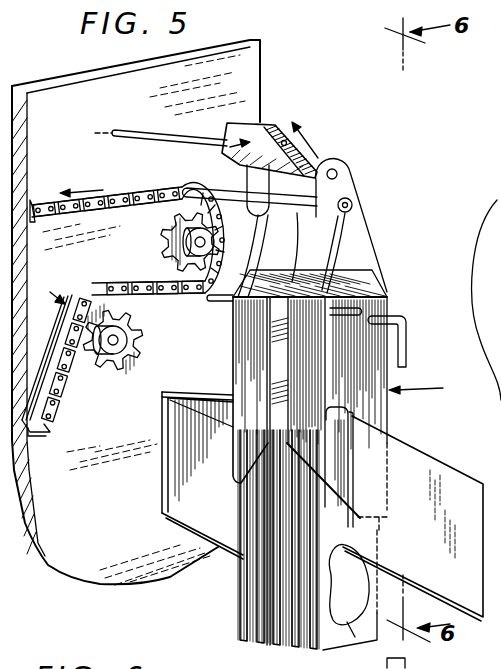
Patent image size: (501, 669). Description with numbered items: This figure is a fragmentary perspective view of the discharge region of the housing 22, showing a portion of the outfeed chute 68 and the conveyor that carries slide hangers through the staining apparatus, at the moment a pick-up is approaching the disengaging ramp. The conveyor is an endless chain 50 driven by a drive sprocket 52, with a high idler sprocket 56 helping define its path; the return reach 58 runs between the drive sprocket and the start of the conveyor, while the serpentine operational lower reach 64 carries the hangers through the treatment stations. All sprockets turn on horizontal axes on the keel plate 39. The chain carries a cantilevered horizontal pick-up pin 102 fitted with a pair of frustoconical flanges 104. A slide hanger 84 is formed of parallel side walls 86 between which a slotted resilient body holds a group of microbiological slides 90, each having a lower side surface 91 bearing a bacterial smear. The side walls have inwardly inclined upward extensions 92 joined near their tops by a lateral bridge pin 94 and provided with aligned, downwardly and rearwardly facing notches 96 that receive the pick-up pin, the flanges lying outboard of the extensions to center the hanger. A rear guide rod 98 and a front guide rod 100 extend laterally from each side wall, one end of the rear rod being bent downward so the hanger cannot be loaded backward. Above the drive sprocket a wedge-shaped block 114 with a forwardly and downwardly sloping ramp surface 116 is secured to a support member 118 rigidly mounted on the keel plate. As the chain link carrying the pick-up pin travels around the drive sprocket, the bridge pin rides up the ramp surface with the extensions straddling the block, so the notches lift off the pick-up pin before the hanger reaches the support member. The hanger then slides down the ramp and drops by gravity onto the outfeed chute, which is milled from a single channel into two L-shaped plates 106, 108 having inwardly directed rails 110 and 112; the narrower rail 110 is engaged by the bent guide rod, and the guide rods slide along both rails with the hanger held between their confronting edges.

The housing 22 is at (260, 78).
The keel plate 39 is at (76, 572).
The endless chain 50 is at (56, 350).
The drive sprocket 52 is at (150, 228).
The high idler sprocket 56 is at (118, 370).
The return reach 58 is at (37, 202).
The operational lower reach 64 is at (46, 431).
The outfeed chute 68 is at (450, 442).
The slide hanger 84 is at (429, 386).
The side walls 86 is at (232, 338).
The microbiological slides 90 is at (300, 620).
The lower side surface 91 is at (313, 640).
The upward extensions 92 is at (365, 262).
The lateral bridge pin 94 is at (322, 167).
The notches 96 is at (279, 215).
The rear guide rod 98 is at (413, 348).
The front guide rod 100 is at (357, 318).
The pick-up pin 102 is at (297, 214).
The flanges 104 is at (352, 205).
The L-shaped plate 106 is at (465, 487).
The L-shaped plate 108 is at (161, 505).
The rail 110 is at (340, 407).
The rail 112 is at (208, 390).
The wedge-shaped block 114 is at (222, 150).
The ramp surface 116 is at (292, 121).
The support member 118 is at (130, 130).